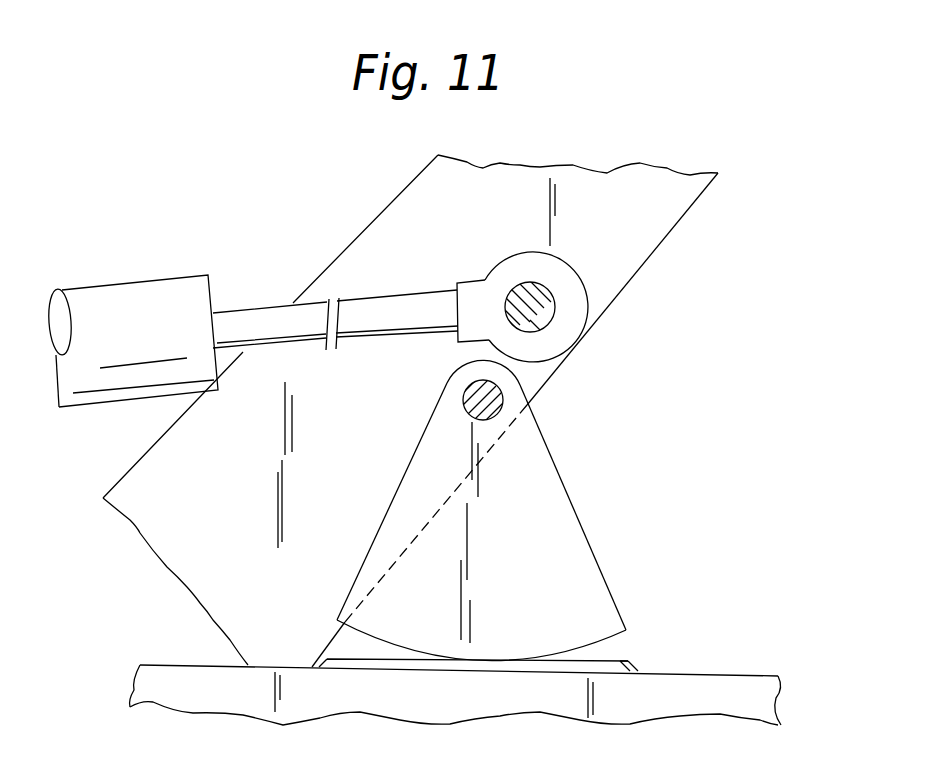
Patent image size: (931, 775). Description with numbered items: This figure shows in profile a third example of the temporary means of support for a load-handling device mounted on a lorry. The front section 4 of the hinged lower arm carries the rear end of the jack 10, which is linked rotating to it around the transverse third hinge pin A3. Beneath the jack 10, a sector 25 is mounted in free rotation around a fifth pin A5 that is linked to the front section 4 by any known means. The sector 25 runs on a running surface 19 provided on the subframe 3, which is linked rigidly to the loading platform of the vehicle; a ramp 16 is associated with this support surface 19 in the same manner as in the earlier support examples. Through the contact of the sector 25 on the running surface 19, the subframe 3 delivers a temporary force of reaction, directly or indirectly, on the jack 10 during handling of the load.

The subframe 3 is at (760, 703).
The front section 4 is at (663, 205).
The jack 10 is at (550, 338).
The ramp 16 is at (640, 662).
The running surface 19 is at (617, 661).
The sector 25 is at (548, 485).
The third hinge pin A3 is at (543, 302).
The fifth pin A5 is at (490, 400).